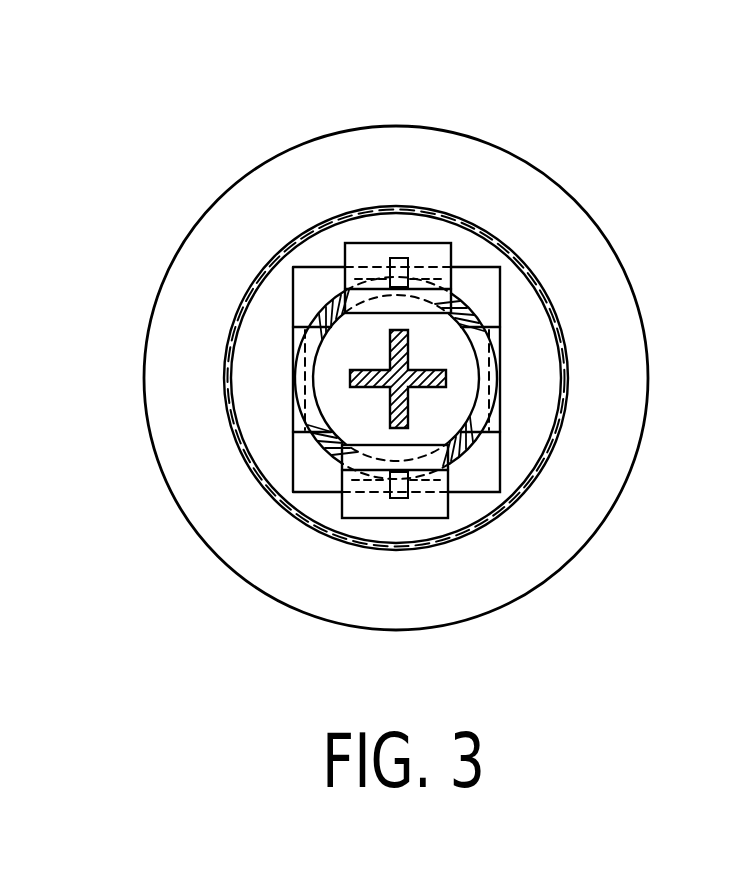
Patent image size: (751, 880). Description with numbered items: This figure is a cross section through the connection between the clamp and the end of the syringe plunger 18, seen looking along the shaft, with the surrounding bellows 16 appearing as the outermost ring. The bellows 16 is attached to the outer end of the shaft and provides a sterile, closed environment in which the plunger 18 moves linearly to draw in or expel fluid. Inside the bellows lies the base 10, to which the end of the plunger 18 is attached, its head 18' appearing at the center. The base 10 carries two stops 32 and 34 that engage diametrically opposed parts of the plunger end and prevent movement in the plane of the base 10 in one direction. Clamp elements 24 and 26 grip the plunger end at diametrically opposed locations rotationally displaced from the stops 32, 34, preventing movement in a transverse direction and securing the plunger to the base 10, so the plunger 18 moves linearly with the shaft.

The base 10 is at (309, 290).
The bellows 16 is at (446, 165).
The syringe plunger 18 is at (431, 479).
The head of the plunger 18' is at (453, 304).
The clamp element 24 is at (413, 503).
The clamp element 26 is at (365, 250).
The stop 32 is at (290, 395).
The stop 34 is at (502, 368).